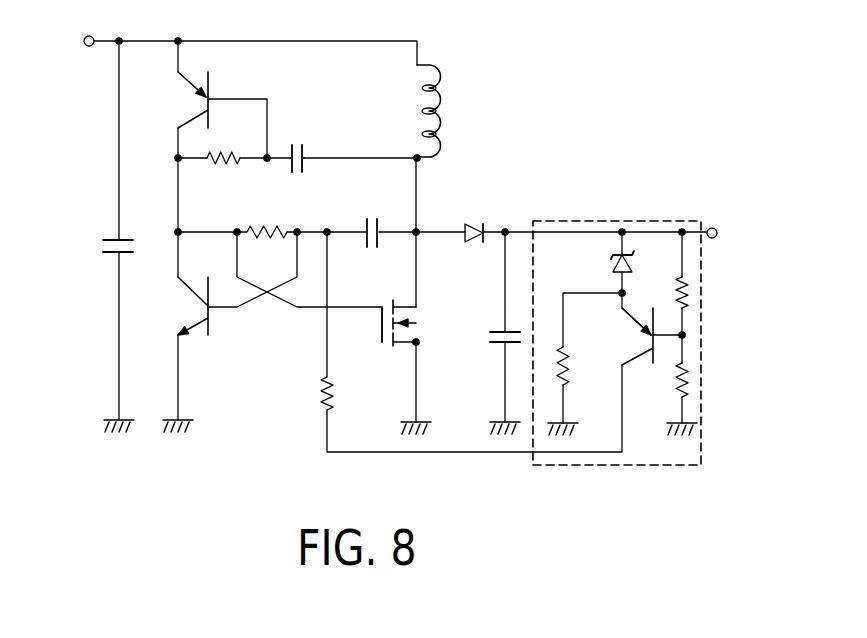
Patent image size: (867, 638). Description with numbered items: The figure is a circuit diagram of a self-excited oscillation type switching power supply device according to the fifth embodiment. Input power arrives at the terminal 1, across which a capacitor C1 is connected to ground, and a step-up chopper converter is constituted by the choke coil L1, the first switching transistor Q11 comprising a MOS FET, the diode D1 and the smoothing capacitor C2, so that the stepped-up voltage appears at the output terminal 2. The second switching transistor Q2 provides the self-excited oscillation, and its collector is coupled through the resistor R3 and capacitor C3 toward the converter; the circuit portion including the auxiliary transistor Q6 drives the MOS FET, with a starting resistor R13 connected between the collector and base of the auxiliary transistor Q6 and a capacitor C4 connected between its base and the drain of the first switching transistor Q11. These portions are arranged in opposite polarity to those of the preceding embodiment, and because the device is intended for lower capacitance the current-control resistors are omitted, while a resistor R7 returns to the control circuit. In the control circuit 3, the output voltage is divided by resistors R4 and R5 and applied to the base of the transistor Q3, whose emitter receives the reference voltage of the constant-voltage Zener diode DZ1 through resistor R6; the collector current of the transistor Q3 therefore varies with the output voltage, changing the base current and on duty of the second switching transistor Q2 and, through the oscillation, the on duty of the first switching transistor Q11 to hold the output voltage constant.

The input terminal 1 is at (85, 35).
The output terminal 2 is at (717, 230).
The control circuit 3 is at (698, 425).
The auxiliary transistor Q6 is at (175, 98).
The starting resistor R13 is at (218, 182).
The capacitor C4 is at (296, 137).
The choke coil L1 is at (411, 111).
The resistor R3 is at (267, 213).
The capacitor C3 is at (372, 213).
The diode D1 is at (476, 211).
The capacitor C1 is at (105, 267).
The second switching transistor Q2 is at (174, 305).
The first switching transistor Q11 is at (426, 318).
The smoothing capacitor C2 is at (491, 357).
The resistor R7 is at (309, 412).
The constant-voltage Zener diode DZ1 is at (593, 265).
The resistor R4 is at (666, 277).
The transistor Q3 is at (617, 335).
The resistor R6 is at (577, 380).
The resistor R5 is at (662, 388).